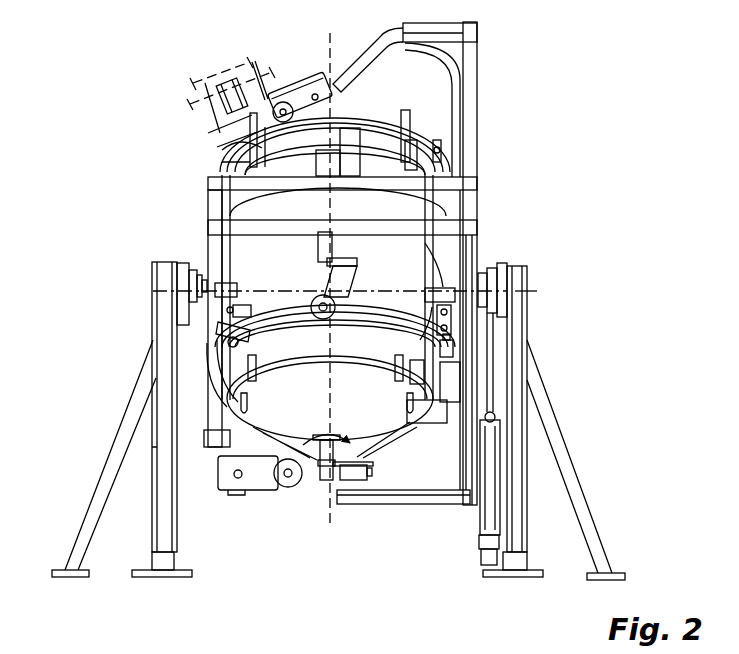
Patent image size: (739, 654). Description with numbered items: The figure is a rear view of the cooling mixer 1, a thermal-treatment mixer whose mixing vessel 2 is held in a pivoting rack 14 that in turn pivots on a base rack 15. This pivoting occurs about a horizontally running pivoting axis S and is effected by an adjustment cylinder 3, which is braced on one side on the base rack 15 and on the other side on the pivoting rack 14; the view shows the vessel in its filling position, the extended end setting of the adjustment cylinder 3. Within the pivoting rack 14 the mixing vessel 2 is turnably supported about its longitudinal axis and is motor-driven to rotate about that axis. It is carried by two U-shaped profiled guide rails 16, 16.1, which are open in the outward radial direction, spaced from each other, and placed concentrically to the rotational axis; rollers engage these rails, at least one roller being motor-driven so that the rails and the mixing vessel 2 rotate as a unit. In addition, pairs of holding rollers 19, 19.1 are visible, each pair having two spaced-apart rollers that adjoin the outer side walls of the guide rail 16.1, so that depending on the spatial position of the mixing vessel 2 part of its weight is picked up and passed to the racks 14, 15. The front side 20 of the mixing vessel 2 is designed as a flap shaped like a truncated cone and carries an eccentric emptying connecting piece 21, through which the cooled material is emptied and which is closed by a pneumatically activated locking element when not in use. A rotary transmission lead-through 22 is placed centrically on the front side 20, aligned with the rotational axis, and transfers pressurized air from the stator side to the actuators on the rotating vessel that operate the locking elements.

The cooling mixer 1 is at (143, 117).
The mixing vessel 2 is at (245, 253).
The adjustment cylinder 3 is at (470, 522).
The pivoting rack 14 is at (485, 192).
The base rack 15 is at (85, 493).
The guide rail 16 is at (468, 230).
The guide rail 16.1 is at (427, 330).
The holding roller pair 19 is at (257, 310).
The holding roller pair 19.1 is at (441, 335).
The front side 20 is at (330, 408).
The emptying connecting piece 21 is at (357, 477).
The rotary transmission lead-through 22 is at (318, 462).
The pivoting axis S is at (153, 291).